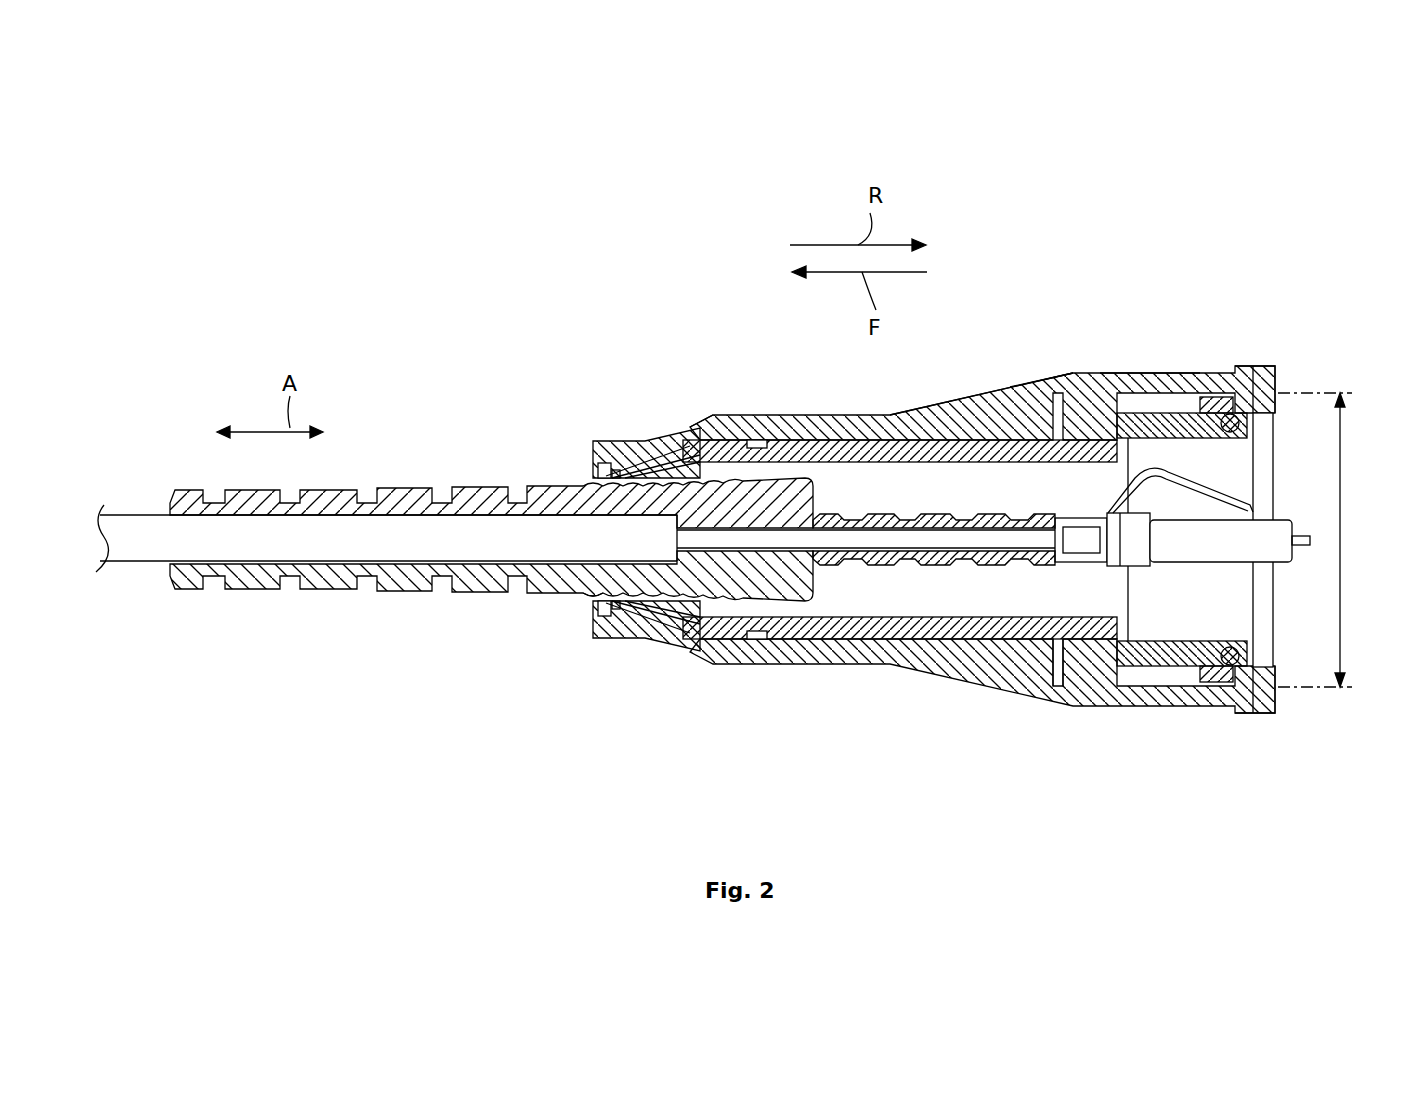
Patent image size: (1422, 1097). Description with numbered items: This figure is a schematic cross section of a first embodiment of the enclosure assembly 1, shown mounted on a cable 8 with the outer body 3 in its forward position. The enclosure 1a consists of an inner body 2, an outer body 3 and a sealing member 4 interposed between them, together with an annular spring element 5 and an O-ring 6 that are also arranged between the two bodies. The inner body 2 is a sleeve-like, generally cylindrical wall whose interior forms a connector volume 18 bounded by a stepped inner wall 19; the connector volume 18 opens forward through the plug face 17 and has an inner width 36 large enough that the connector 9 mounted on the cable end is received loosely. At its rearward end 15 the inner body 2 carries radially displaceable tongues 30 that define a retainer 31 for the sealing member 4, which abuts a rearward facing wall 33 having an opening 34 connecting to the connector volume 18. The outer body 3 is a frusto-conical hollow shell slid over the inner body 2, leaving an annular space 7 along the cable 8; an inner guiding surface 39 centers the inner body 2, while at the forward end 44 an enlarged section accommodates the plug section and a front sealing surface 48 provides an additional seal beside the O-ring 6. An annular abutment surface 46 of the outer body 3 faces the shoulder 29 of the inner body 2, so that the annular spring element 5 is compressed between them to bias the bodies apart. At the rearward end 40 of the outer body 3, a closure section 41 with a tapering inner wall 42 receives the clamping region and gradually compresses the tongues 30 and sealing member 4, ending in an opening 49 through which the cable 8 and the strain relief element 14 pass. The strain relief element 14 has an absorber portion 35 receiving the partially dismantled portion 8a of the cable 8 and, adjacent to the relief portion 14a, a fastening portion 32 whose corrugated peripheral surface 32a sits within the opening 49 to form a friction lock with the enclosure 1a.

The enclosure assembly 1 is at (960, 290).
The enclosure 1a is at (805, 682).
The inner body 2 is at (1112, 667).
The outer body 3 is at (975, 665).
The sealing member 4 is at (658, 620).
The annular spring element 5 is at (1053, 398).
The O-ring 6 is at (1243, 402).
The annular space 7 is at (1001, 440).
The cable 8 is at (138, 550).
The at least partially dismantled portion of the cable 8a is at (820, 535).
The connector 9 is at (1229, 551).
The strain relief element 14 is at (392, 603).
The relief portion 14a is at (485, 582).
The rearward end 15 is at (625, 455).
The plug face 17 is at (1240, 482).
The connector volume 18 is at (1005, 505).
The inner wall 19 is at (845, 608).
The shoulder 29 is at (1038, 374).
The tongues 30 is at (648, 452).
The retainer 31 is at (615, 460).
The fastening portion 32 is at (557, 600).
The peripheral surface 32a is at (703, 652).
The rearward facing wall 33 is at (690, 450).
The opening 34 is at (738, 440).
The absorber portion 35 is at (933, 575).
The inner width 36 is at (1344, 532).
The inner guiding surface 39 is at (933, 428).
The rearward end 40 is at (580, 440).
The closure section 41 is at (1207, 606).
The tapering inner wall 42 is at (618, 622).
The forward end 44 is at (1150, 332).
The annular abutment surface 46 is at (1058, 645).
The front sealing surface 48 is at (1248, 715).
The opening 49 is at (580, 466).